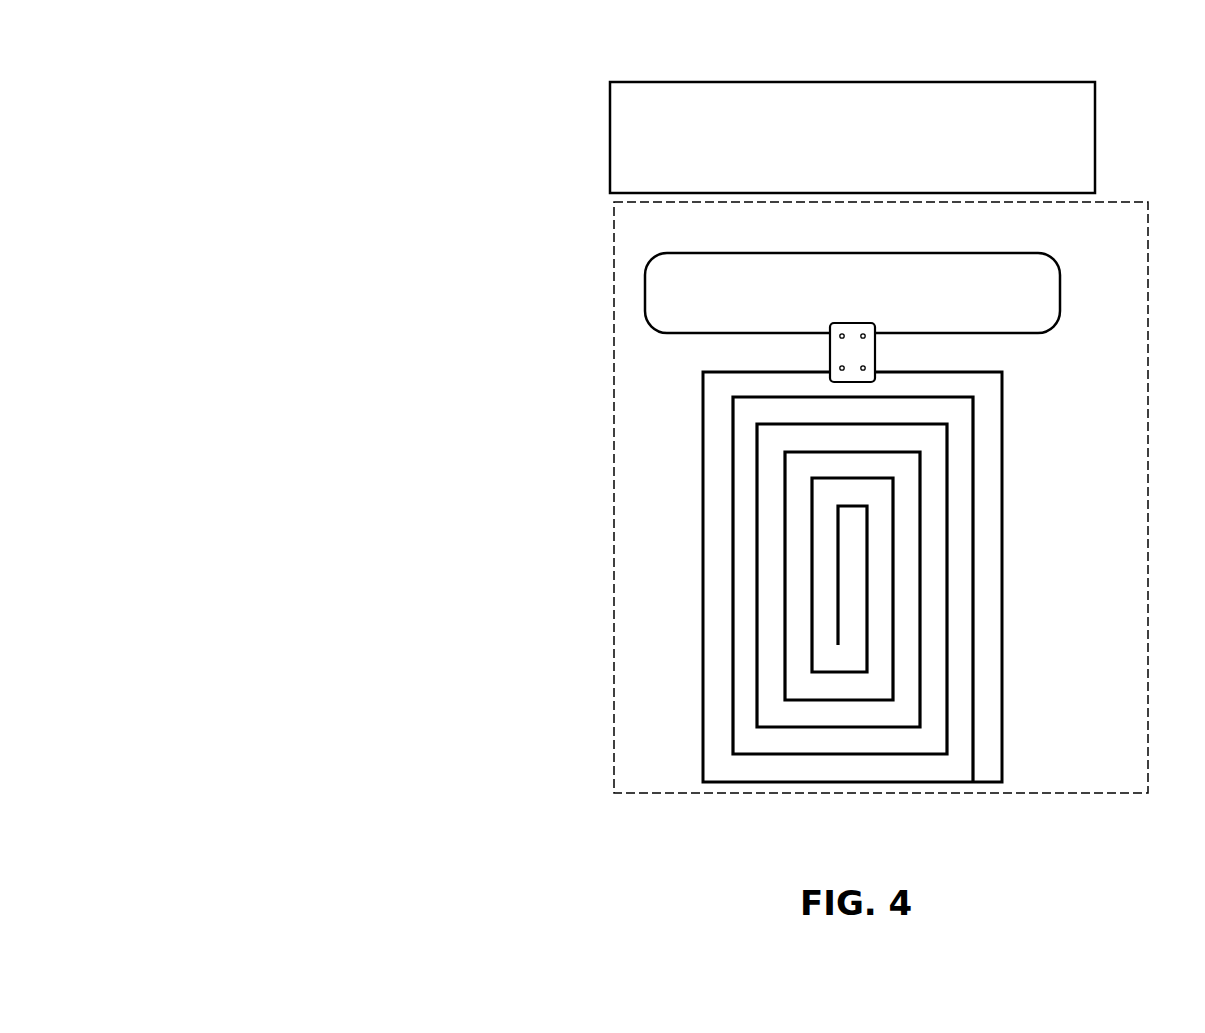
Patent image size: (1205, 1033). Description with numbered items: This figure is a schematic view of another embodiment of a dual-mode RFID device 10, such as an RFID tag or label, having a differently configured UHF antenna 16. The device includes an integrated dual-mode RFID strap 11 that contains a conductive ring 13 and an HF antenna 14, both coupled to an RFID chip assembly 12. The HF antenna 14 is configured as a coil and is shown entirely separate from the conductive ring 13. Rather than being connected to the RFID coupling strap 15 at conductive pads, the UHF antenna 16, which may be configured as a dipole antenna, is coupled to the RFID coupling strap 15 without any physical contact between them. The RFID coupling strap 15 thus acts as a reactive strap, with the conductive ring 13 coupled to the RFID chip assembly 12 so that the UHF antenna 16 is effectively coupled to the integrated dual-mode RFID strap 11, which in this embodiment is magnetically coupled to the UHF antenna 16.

The dual-mode RFID device 10 is at (256, 157).
The integrated dual-mode RFID strap 11 is at (1024, 802).
The RFID chip assembly 12 is at (897, 559).
The conductive ring 13 is at (1060, 292).
The HF antenna 14 is at (852, 783).
The RFID coupling strap 15 is at (830, 356).
The UHF antenna 16 is at (851, 82).